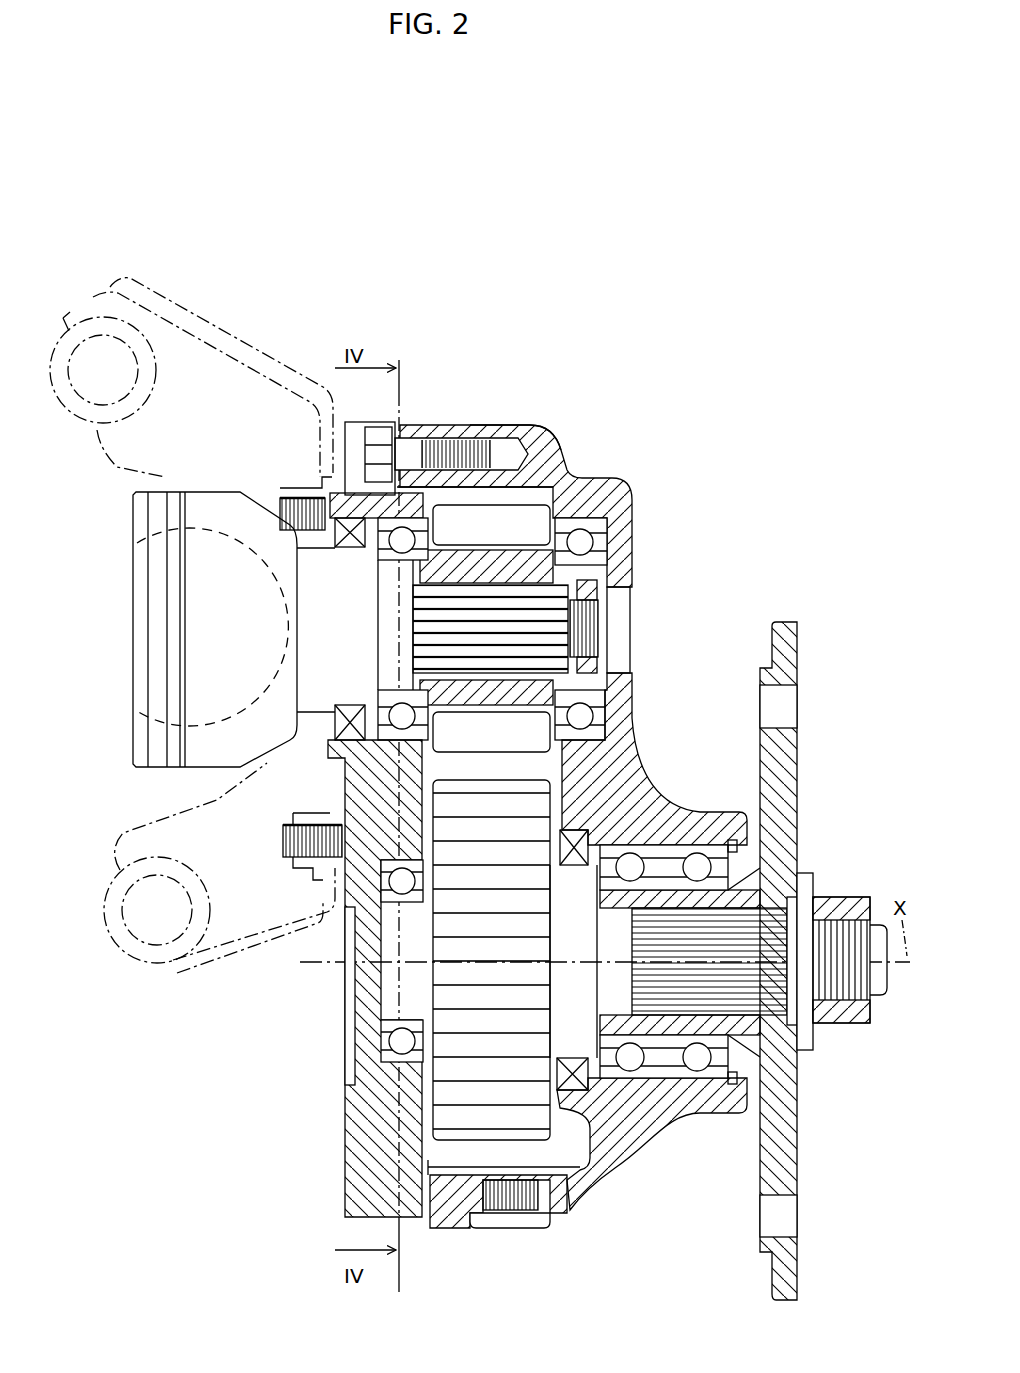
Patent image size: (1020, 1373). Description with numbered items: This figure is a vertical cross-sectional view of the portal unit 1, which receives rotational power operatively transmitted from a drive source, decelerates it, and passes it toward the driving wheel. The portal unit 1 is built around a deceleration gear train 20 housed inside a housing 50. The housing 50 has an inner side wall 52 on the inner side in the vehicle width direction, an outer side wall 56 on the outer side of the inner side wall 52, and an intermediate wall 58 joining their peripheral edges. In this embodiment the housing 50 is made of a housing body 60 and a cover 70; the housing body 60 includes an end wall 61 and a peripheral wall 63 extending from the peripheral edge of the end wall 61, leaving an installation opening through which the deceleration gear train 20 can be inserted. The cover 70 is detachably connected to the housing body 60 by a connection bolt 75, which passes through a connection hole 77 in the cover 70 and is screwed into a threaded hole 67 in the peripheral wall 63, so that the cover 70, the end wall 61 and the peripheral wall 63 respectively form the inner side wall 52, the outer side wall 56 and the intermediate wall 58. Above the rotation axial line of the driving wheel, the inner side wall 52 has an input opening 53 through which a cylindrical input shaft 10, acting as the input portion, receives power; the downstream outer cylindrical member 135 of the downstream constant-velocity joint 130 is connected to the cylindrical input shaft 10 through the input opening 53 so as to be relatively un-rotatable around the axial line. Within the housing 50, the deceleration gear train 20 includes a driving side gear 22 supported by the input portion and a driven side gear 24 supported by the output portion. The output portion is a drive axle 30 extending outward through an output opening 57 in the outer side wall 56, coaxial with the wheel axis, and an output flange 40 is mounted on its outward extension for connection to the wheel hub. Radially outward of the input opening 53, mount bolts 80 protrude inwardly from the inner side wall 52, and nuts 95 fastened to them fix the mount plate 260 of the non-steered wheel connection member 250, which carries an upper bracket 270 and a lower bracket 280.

The portal unit 1 is at (730, 395).
The cylindrical input shaft 10 is at (515, 572).
The deceleration gear train 20 is at (415, 963).
The driving side gear 22 is at (515, 517).
The driven side gear 24 is at (513, 1117).
The drive axle 30 is at (752, 993).
The output flange 40 is at (786, 772).
The housing 50 is at (527, 380).
The inner side wall 52 is at (338, 1128).
The input opening 53 is at (372, 535).
The outer side wall 56 is at (645, 712).
The output opening 57 is at (655, 1067).
The intermediate wall 58 is at (452, 1233).
The housing body 60 is at (581, 460).
The end wall 61 is at (578, 760).
The peripheral wall 63 is at (473, 435).
The threaded hole 67 is at (517, 425).
The cover 70 is at (338, 1086).
The connection bolt 75 is at (455, 468).
The connection hole 77 is at (431, 492).
The mount bolts 80 is at (285, 498).
The nuts 95 is at (322, 484).
The downstream constant-velocity joint 130 is at (113, 716).
The downstream outer cylindrical member 135 is at (200, 515).
The non-steered wheel connection member 250 is at (223, 325).
The mount plate 260 is at (335, 793).
The upper bracket 270 is at (113, 287).
The lower bracket 280 is at (157, 965).